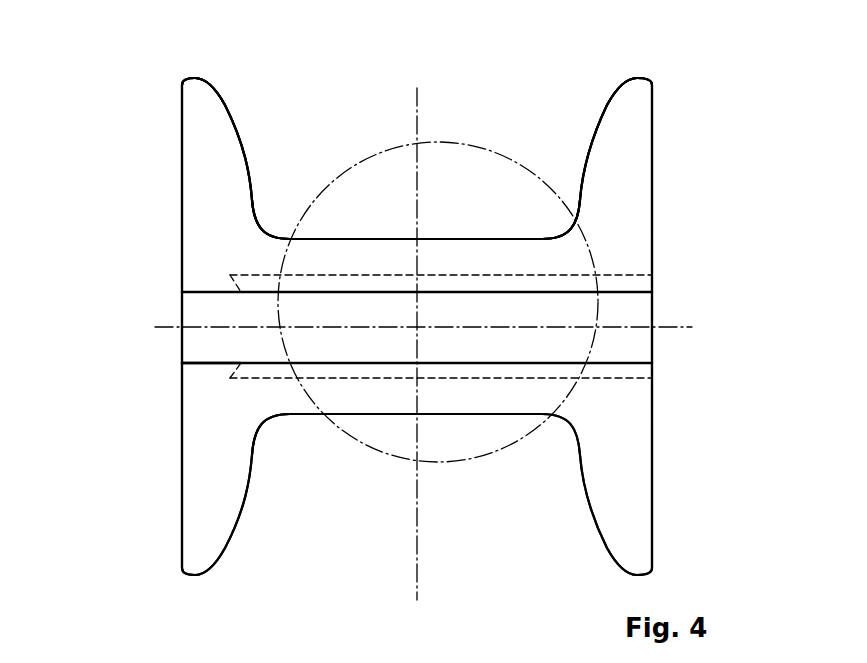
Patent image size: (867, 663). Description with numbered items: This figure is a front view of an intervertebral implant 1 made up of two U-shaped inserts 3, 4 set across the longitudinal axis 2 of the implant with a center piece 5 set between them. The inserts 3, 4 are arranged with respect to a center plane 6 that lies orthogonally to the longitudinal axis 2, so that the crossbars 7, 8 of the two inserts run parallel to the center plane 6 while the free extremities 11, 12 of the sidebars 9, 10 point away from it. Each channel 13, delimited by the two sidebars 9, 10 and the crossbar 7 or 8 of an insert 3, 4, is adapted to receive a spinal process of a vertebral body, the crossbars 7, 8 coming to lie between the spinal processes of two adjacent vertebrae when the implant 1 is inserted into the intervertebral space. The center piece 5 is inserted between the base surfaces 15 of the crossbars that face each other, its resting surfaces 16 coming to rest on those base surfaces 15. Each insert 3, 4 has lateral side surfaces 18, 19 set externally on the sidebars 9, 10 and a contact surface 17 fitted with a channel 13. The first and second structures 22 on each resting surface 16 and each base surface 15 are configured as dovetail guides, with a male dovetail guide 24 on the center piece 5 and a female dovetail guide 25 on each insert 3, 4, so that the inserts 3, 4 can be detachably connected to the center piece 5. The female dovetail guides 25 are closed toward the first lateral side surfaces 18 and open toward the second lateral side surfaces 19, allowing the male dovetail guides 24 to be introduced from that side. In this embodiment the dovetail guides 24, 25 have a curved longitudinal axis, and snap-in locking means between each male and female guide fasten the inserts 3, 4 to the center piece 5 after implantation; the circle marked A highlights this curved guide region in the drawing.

The intervertebral implant 1 is at (440, 61).
The longitudinal axis 2 is at (415, 578).
The first insert 3 is at (658, 227).
The second insert 4 is at (660, 420).
The center piece 5 is at (658, 318).
The center plane 6 is at (678, 328).
The crossbar 7 is at (453, 252).
The crossbar 8 is at (372, 396).
The sidebar 9 is at (208, 183).
The sidebar 10 is at (633, 190).
The free extremity 11 is at (195, 78).
The free extremity 12 is at (637, 80).
The channel 13 is at (325, 152).
The base surface 15 is at (197, 363).
The resting surface 16 is at (208, 292).
The contact surface 17 is at (210, 363).
The first lateral side surface 18 is at (182, 200).
The second lateral side surface 19 is at (652, 512).
The first and second structures 22 is at (320, 400).
The male dovetail guide 24 is at (440, 372).
The female dovetail guide 25 is at (490, 377).
The circle / diameter A is at (533, 170).